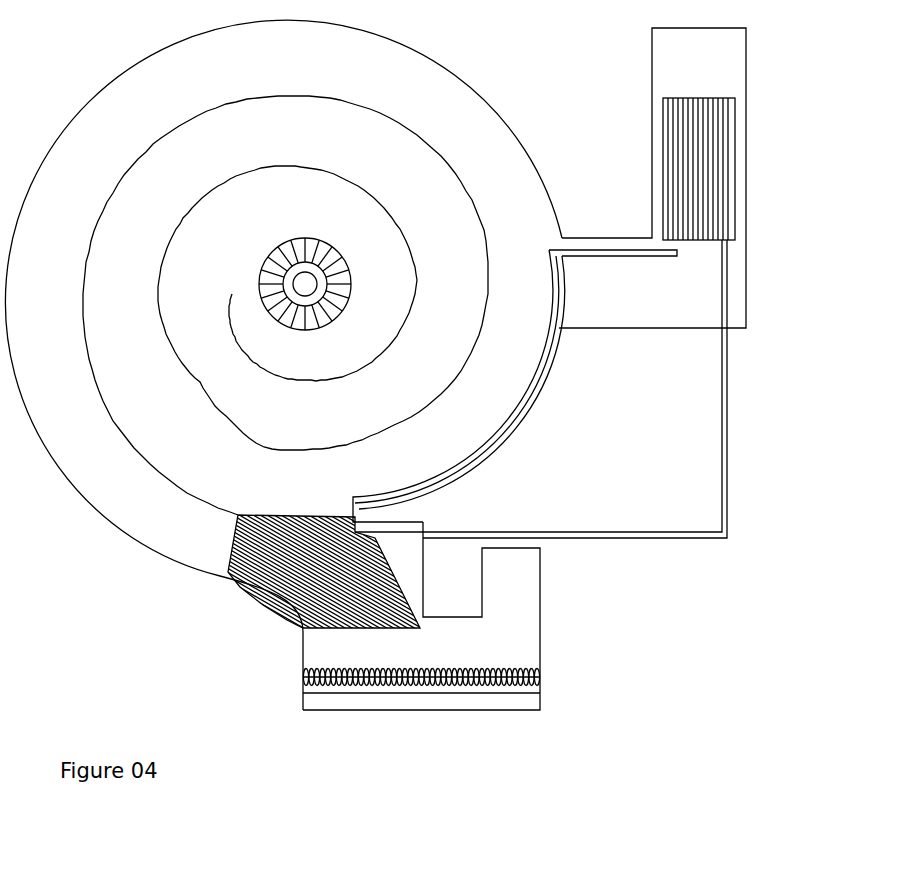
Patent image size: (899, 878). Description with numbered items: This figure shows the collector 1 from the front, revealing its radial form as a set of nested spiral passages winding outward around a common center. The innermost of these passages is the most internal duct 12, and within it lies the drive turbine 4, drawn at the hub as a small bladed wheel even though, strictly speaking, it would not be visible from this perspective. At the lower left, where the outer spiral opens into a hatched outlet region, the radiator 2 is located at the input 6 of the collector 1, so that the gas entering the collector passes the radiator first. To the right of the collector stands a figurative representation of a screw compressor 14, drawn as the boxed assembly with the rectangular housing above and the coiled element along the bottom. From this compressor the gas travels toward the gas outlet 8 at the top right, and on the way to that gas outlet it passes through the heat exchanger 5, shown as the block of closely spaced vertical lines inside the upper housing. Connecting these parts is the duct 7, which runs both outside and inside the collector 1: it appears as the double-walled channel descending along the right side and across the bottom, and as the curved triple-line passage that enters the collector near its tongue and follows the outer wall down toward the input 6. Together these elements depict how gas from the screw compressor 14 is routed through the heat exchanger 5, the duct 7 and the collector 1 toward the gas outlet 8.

The collector 1 is at (497, 100).
The radiator 2 is at (226, 563).
The drive turbine 4 is at (340, 262).
The heat exchanger 5 is at (738, 148).
The input 6 is at (405, 641).
The duct 7 is at (732, 388).
The gas outlet 8 is at (752, 27).
The most internal duct 12 is at (342, 337).
The screw compressor 14 is at (545, 676).